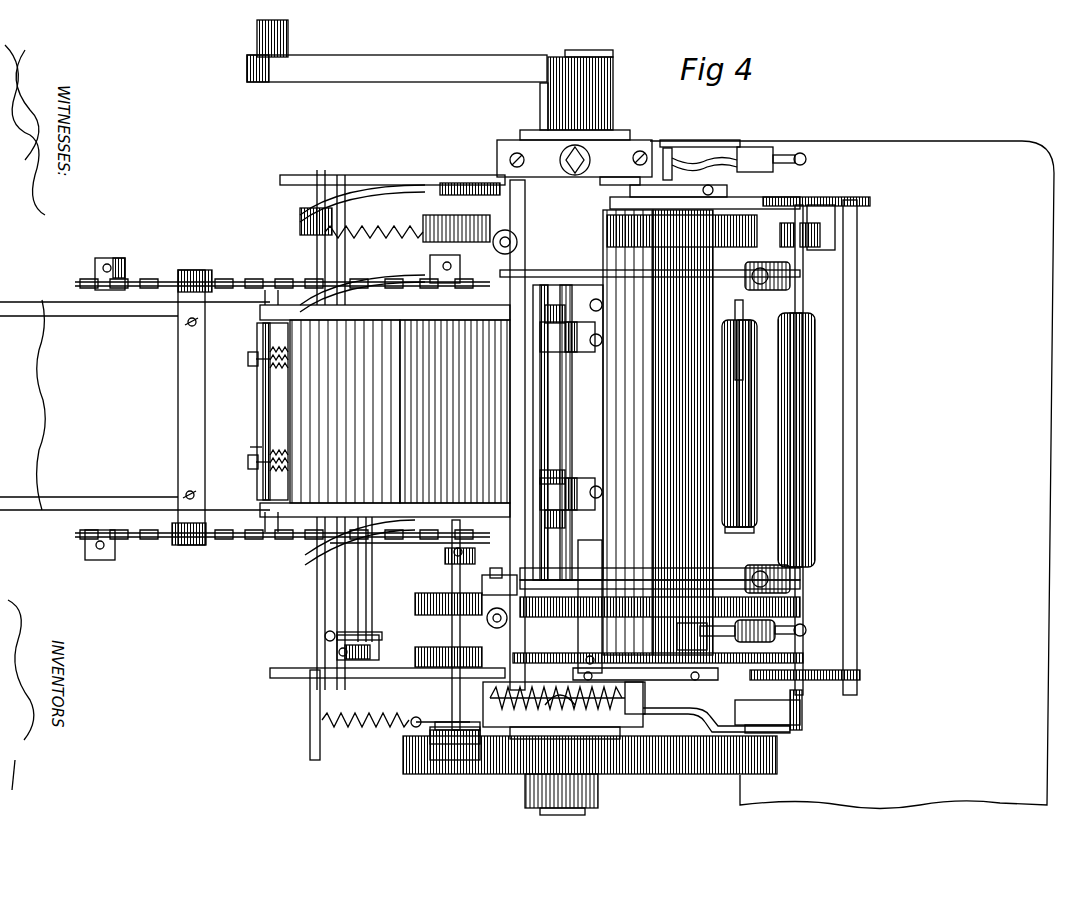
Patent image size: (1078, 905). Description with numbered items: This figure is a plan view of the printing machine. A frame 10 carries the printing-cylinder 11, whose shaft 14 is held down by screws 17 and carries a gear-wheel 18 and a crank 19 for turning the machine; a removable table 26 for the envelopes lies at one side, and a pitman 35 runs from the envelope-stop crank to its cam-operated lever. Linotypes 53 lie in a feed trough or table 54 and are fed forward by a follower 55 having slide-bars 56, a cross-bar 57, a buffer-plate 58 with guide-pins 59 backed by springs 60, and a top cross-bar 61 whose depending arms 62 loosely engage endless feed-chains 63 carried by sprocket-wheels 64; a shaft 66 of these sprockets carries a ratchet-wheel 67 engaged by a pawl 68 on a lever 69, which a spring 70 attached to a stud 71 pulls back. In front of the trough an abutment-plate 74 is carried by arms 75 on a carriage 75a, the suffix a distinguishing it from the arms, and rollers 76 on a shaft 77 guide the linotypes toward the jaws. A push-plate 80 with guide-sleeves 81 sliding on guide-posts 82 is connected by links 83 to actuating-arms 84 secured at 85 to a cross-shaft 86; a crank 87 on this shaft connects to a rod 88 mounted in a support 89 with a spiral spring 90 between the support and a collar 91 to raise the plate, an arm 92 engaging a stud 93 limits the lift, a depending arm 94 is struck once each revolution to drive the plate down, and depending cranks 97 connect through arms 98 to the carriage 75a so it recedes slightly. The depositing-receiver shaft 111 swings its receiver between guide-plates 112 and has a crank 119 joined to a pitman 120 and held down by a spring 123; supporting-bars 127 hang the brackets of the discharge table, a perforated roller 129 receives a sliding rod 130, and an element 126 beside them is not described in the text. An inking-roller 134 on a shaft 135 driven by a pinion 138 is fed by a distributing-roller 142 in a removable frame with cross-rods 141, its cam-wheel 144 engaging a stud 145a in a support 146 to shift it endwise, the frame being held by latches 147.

The frame 10 is at (638, 142).
The printing-cylinder 11 is at (680, 432).
The shaft 14 is at (578, 56).
The screws 17 is at (574, 153).
The gear-wheels 18 is at (668, 778).
The crank 19 is at (450, 82).
The table 26 is at (852, 475).
The pitman 35 is at (700, 150).
The linotypes 53 is at (310, 413).
The feed trough or table 54 is at (135, 405).
The follower 55 is at (239, 451).
The slide-bars 56 is at (250, 335).
The cross-bar 57 is at (255, 392).
The buffer-plate 58 is at (258, 547).
The guide-pins 59 is at (216, 492).
The springs 60 is at (277, 401).
The top cross-bar 61 is at (178, 418).
The depending arms 62 is at (210, 278).
The endless feed-chains 63 is at (282, 283).
The sprocket-wheels 64 is at (92, 280).
The shaft 66 is at (452, 695).
The ratchet-wheel 67 is at (400, 735).
The pawl 68 is at (465, 760).
The lever 69 is at (468, 722).
The spring 70 is at (360, 713).
The stud 71 is at (312, 715).
The abutment-plate 74 is at (541, 416).
The arms 75 is at (625, 190).
The carriage 75a is at (592, 637).
The rollers 76 is at (559, 418).
The shaft 77 is at (554, 483).
The push-plate 80 is at (660, 588).
The guide-sleeves 81 is at (515, 238).
The guide-posts 82 is at (508, 235).
The links 83 is at (499, 572).
The actuating-arms 84 is at (553, 272).
The fastening 85 is at (805, 297).
The cross-shaft 86 is at (783, 545).
The crank 87 is at (790, 728).
The rod 88 is at (770, 735).
The support 89 is at (557, 706).
The spiral spring 90 is at (565, 717).
The collar 91 is at (647, 700).
The arm 92 is at (740, 155).
The stud 93 is at (670, 150).
The depending arm 94 is at (775, 628).
The depending cranks 97 is at (800, 200).
The arms 98 is at (693, 212).
The shaft 111 is at (317, 250).
The guide-plates 112 is at (420, 268).
The crank 119 is at (300, 220).
The pitman 120 is at (367, 213).
The spring 123 is at (374, 222).
The bar 126 is at (478, 172).
The supporting-bars 127 is at (423, 178).
The perforated roller 129 is at (380, 640).
The rod 130 is at (372, 652).
The inking-roller 134 is at (755, 352).
The shaft 135 is at (740, 535).
The pinion 138 is at (364, 618).
The cross-rods 141 is at (860, 298).
The distributing-roller 142 is at (808, 397).
The cam-wheel 144 is at (816, 273).
The stud 145a is at (810, 240).
The support 146 is at (835, 215).
The latches 147 is at (802, 714).
The plate a is at (697, 120).